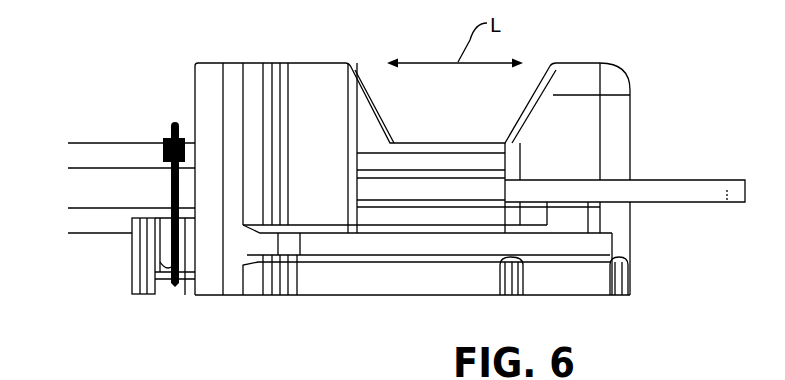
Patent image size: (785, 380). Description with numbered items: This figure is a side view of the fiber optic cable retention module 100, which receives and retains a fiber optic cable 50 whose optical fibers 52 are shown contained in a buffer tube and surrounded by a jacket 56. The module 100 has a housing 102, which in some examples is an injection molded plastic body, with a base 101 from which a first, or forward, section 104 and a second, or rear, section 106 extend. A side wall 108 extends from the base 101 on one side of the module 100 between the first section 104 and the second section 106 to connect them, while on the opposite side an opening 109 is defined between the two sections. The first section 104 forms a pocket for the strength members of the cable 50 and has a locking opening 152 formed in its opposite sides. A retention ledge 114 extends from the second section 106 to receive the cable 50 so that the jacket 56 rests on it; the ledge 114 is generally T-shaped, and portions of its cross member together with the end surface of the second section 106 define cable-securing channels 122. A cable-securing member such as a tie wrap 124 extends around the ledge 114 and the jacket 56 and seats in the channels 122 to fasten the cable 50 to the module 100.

The fiber optic cable retention module 100 is at (642, 46).
The fiber optic cable 50 is at (132, 98).
The jacket 56 is at (128, 152).
The optical fibers 52 is at (692, 187).
The base 101 is at (482, 288).
The housing 102 is at (625, 247).
The first section 104 is at (583, 95).
The second section 106 is at (290, 82).
The side wall 108 is at (440, 147).
The opening 109 is at (406, 228).
The retention ledge 114 is at (138, 267).
The cable-securing channels 122 is at (183, 300).
The tie wrap 124 is at (172, 286).
The locking opening 152 is at (568, 221).